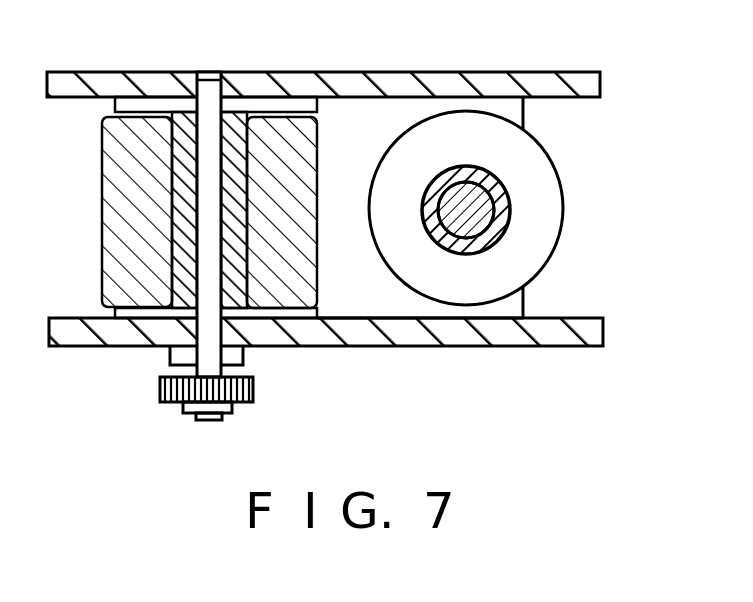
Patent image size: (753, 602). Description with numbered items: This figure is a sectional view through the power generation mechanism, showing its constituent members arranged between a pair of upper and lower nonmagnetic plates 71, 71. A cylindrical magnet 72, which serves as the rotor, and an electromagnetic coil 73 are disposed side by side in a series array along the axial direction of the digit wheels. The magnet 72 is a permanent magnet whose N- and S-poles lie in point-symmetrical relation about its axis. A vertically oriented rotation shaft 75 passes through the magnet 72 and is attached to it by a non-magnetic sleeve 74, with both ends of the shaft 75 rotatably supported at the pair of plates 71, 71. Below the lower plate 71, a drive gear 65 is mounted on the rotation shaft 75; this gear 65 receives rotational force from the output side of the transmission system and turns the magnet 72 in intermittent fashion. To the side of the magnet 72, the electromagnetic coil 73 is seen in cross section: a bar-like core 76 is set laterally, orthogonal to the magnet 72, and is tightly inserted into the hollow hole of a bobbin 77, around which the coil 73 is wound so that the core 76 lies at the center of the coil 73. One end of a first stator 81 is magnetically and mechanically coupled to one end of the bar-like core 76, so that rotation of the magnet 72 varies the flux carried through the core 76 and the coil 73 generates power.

The nonmagnetic plate 71 is at (493, 78).
The cylindrical magnet 72 is at (130, 158).
The electromagnetic coil 73 is at (542, 168).
The non-magnetic sleeve 74 is at (230, 190).
The rotation shaft 75 is at (205, 287).
The bar-like core 76 is at (510, 214).
The bobbin 77 is at (492, 208).
The first stator 81 is at (338, 291).
The drive gear 65 is at (253, 393).